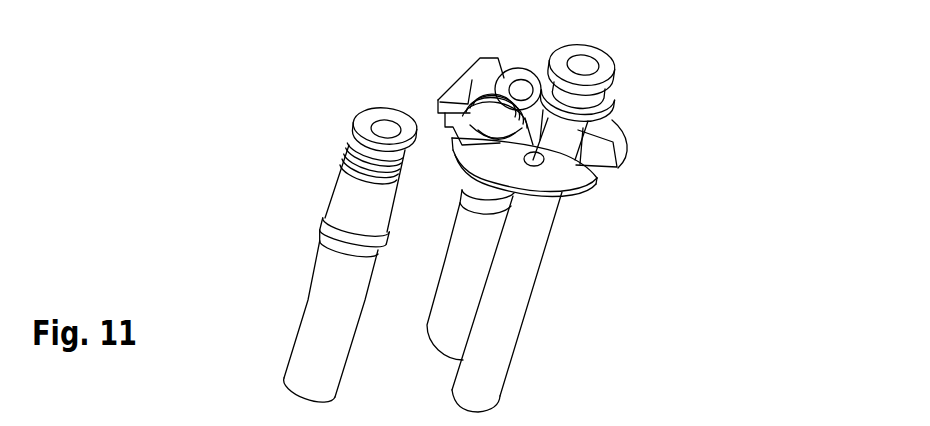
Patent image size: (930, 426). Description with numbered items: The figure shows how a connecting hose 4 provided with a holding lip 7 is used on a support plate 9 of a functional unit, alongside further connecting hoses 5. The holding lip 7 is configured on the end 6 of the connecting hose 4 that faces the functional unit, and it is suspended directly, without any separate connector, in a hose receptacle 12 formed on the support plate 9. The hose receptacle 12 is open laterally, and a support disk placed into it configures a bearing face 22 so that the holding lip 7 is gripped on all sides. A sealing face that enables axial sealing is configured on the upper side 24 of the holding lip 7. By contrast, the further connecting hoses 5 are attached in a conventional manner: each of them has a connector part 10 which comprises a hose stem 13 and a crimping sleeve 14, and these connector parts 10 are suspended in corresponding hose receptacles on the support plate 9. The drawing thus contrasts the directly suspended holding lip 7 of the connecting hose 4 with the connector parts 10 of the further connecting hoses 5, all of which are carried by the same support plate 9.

The connecting hose 4 is at (497, 280).
The further connecting hoses 5 is at (452, 315).
The end 6 is at (520, 72).
The holding lip 7 is at (609, 70).
The support plate 9 is at (457, 92).
The connector part 10 is at (350, 150).
The hose receptacle 12 is at (606, 164).
The hose stem 13 is at (366, 120).
The crimping sleeve 14 is at (483, 187).
The bearing face 22 is at (603, 109).
The upper side 24 is at (611, 56).